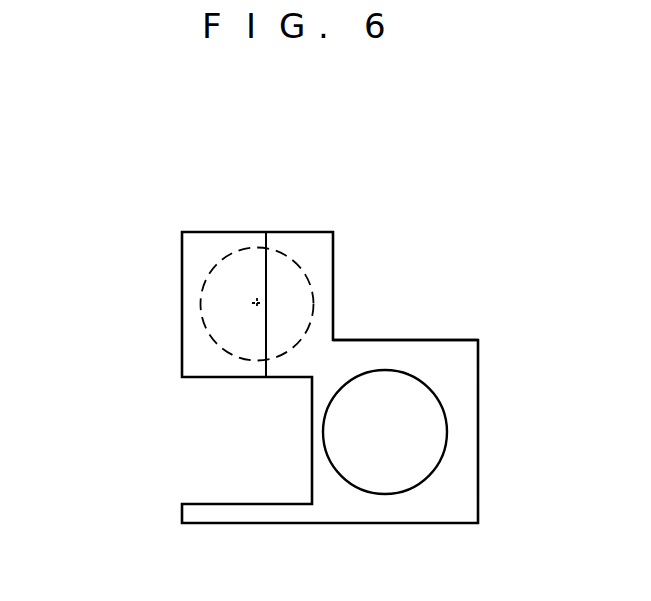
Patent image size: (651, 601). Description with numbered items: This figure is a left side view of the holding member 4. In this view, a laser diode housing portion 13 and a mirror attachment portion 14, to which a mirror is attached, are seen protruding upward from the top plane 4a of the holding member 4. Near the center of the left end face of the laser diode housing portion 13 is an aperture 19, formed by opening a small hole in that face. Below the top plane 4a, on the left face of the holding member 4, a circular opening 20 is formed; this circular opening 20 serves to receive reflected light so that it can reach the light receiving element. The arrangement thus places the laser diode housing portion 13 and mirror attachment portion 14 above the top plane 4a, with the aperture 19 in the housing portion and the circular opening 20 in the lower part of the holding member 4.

The holding member 4 is at (425, 233).
The top plane 4a is at (428, 340).
The laser diode housing portion 13 is at (290, 245).
The mirror attachment portion 14 is at (222, 245).
The aperture 19 is at (244, 298).
The circular opening 20 is at (329, 405).